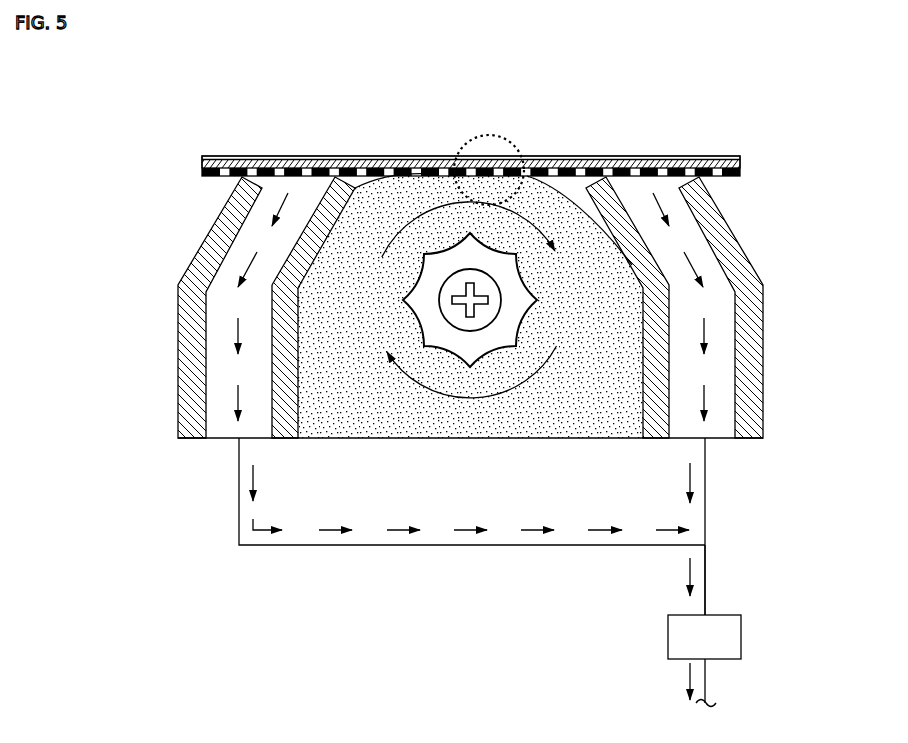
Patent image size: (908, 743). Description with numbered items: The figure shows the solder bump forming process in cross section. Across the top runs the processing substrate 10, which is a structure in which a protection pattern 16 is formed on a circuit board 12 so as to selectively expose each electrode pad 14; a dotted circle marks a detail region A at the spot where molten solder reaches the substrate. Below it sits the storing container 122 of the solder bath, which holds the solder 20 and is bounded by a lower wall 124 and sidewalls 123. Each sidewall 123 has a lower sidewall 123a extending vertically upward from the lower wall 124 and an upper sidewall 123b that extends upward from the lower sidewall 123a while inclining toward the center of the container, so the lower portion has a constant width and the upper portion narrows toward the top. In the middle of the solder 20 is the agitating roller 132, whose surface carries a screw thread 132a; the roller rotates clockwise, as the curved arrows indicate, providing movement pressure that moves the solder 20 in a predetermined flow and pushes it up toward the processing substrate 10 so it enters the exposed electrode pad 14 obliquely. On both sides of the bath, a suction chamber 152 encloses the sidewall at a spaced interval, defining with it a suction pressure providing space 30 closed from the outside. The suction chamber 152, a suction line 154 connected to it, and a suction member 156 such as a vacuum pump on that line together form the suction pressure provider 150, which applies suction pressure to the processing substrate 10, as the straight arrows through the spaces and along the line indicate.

The processing substrate 10 is at (273, 158).
The circuit board 12 is at (350, 166).
The electrode pad 14 is at (390, 169).
The protection pattern 16 is at (433, 172).
The detail region A is at (510, 140).
The solder 20 is at (580, 428).
The storing container 122 is at (54, 282).
The sidewall 123 is at (111, 235).
The lower sidewall 123a is at (280, 340).
The upper sidewall 123b is at (258, 254).
The lower wall 124 is at (345, 437).
The suction pressure providing space 30 is at (226, 434).
The agitating roller 132 is at (475, 360).
The screw thread 132a is at (443, 327).
The suction pressure provider 150 is at (817, 475).
The suction chamber 152 is at (758, 410).
The suction line 154 is at (706, 568).
The suction member 156 is at (730, 635).